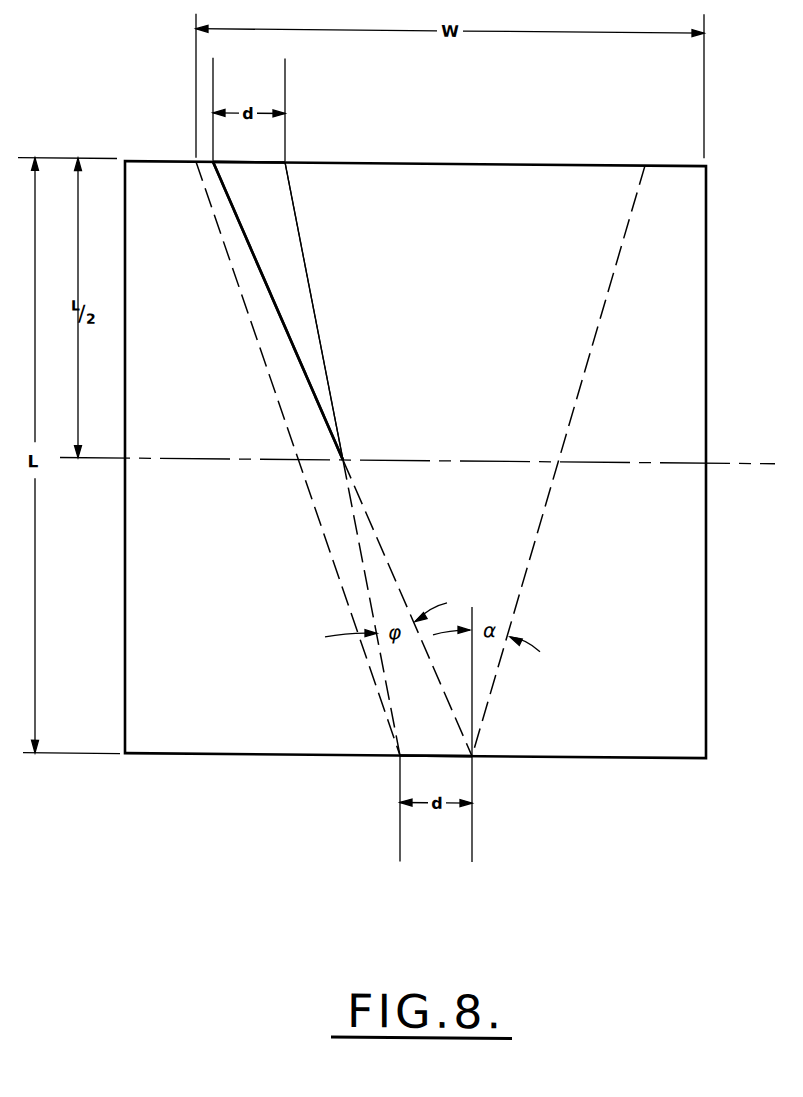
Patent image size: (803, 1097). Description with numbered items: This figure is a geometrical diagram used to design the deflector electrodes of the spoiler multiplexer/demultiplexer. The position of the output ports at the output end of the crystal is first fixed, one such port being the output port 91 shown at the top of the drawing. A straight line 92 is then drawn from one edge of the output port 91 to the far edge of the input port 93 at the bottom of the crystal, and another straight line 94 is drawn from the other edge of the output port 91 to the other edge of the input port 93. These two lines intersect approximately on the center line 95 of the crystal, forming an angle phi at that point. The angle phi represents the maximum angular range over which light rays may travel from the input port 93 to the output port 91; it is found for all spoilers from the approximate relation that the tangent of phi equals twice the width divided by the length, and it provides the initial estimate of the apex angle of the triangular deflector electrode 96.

The output port 91 is at (255, 158).
The straight line 92 is at (255, 261).
The input port 93 is at (425, 754).
The straight line 94 is at (315, 312).
The center line 95 is at (205, 457).
The triangular deflector electrode 96 is at (270, 213).